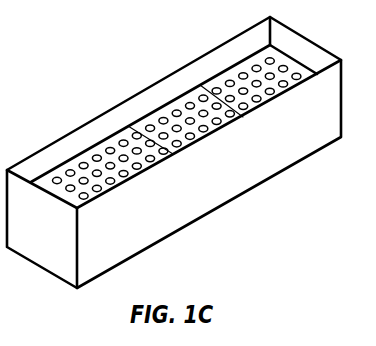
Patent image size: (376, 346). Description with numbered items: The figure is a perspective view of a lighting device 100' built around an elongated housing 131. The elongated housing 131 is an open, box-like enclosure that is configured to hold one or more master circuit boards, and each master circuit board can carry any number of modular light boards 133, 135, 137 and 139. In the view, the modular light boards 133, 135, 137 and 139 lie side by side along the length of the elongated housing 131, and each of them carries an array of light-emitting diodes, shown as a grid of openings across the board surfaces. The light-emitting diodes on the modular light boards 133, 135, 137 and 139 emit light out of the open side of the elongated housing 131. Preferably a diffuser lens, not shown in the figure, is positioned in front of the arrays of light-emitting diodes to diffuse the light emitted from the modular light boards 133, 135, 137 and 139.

The lighting device 100' is at (174, 152).
The elongated housing 131 is at (182, 67).
The modular light board 133 is at (283, 58).
The modular light board 135 is at (220, 122).
The modular light board 137 is at (140, 169).
The modular light board 139 is at (55, 173).